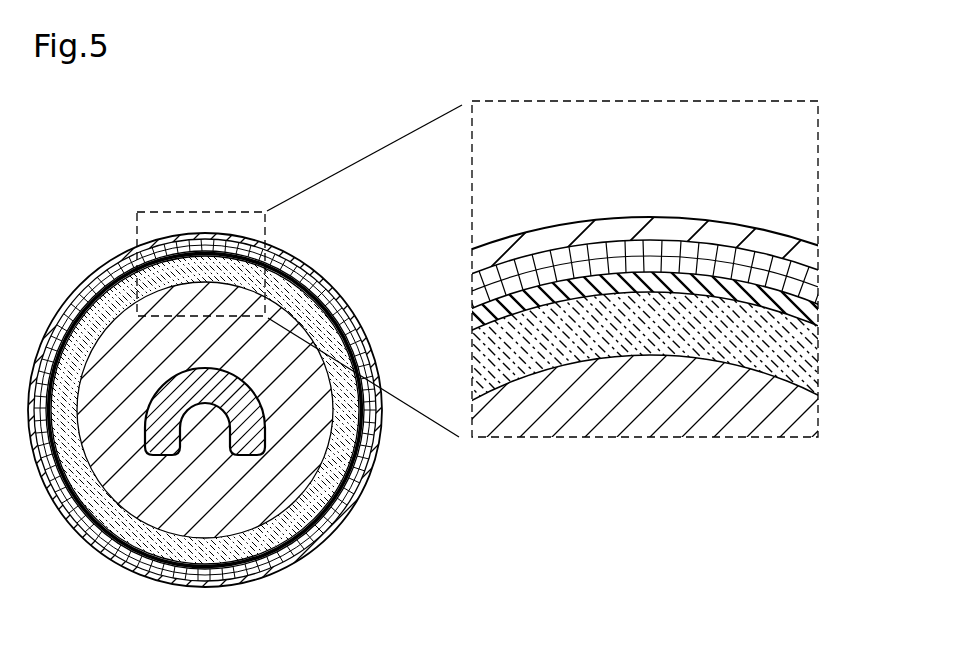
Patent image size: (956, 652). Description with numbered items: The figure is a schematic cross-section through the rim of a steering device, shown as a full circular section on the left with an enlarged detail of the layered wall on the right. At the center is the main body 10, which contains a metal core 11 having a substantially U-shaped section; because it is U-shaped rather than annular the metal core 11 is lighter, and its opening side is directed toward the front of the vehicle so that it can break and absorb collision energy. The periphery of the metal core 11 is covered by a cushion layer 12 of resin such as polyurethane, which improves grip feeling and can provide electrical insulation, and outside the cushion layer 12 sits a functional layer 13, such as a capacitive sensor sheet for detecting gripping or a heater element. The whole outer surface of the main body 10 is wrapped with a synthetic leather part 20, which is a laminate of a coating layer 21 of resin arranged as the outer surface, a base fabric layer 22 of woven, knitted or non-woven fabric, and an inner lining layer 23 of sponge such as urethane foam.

The main body 10 is at (491, 337).
The metal core 11 is at (250, 497).
The cushion layer 12 is at (305, 546).
The functional layer 13 is at (338, 458).
The synthetic leather part 20 is at (548, 337).
The coating layer 21 is at (573, 224).
The base fabric layer 22 is at (627, 263).
The lining layer 23 is at (572, 173).